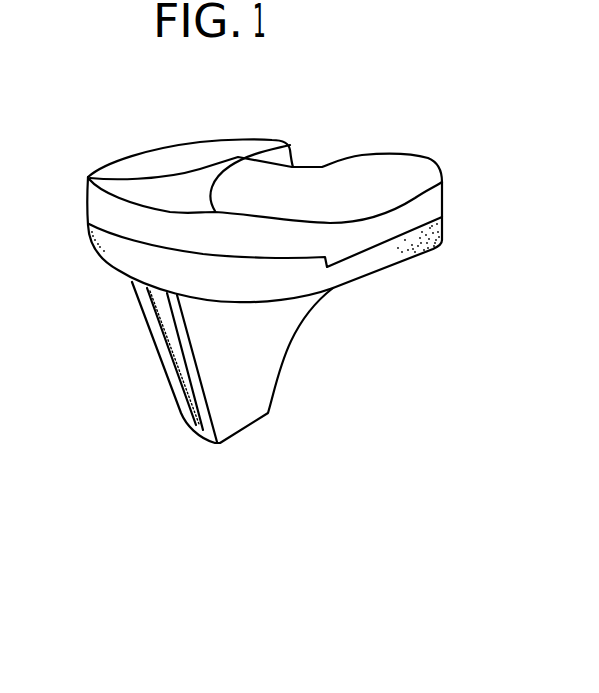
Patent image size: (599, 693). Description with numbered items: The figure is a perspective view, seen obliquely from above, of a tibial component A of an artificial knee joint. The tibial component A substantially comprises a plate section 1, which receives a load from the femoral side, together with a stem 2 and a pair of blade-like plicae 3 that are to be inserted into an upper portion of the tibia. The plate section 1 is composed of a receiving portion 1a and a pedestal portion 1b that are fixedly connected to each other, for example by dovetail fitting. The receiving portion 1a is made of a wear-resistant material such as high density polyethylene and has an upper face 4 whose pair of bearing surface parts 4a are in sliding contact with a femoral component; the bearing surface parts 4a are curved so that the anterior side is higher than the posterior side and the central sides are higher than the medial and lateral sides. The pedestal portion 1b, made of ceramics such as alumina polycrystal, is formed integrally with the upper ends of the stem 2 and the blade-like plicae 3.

The plate section 1 is at (462, 188).
The receiving portion 1a is at (424, 215).
The pedestal portion 1b is at (420, 254).
The stem 2 is at (197, 387).
The blade-like plicae 3 is at (286, 348).
The upper face 4 is at (157, 193).
The bearing surface parts 4a is at (187, 160).
The tibial component A is at (190, 362).